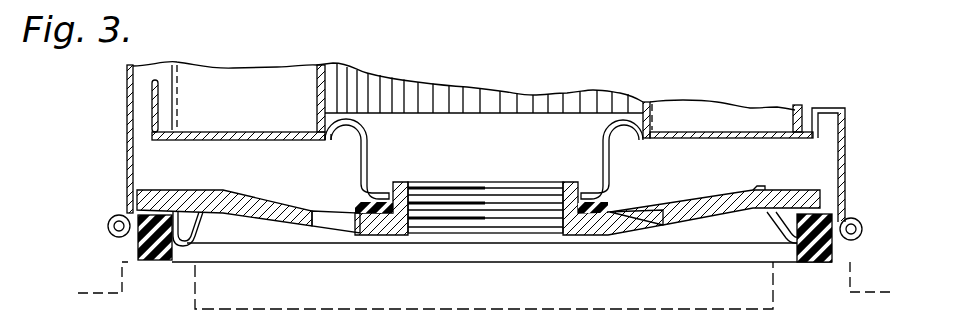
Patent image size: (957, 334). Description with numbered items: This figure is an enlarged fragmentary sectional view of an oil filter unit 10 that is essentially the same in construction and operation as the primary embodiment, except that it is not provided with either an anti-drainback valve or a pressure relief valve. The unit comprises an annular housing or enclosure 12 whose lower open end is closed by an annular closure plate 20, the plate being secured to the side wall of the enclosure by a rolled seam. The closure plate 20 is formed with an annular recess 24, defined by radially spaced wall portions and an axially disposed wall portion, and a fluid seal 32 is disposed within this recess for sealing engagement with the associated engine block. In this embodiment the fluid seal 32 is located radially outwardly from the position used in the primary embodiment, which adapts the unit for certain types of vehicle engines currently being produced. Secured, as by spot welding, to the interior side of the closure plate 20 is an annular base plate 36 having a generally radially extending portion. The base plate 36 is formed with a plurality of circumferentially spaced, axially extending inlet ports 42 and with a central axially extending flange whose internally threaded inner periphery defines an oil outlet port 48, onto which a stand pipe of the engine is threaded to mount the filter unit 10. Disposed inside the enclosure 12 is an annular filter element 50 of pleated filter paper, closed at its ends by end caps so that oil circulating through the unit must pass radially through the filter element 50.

The filter unit 10 is at (858, 172).
The housing or enclosure 12 is at (849, 116).
The closure plate 20 is at (765, 227).
The annular recess 24 is at (815, 222).
The fluid seal 32 is at (815, 263).
The base plate 36 is at (703, 197).
The inlet ports 42 is at (657, 220).
The oil outlet port 48 is at (503, 215).
The filter element 50 is at (803, 107).